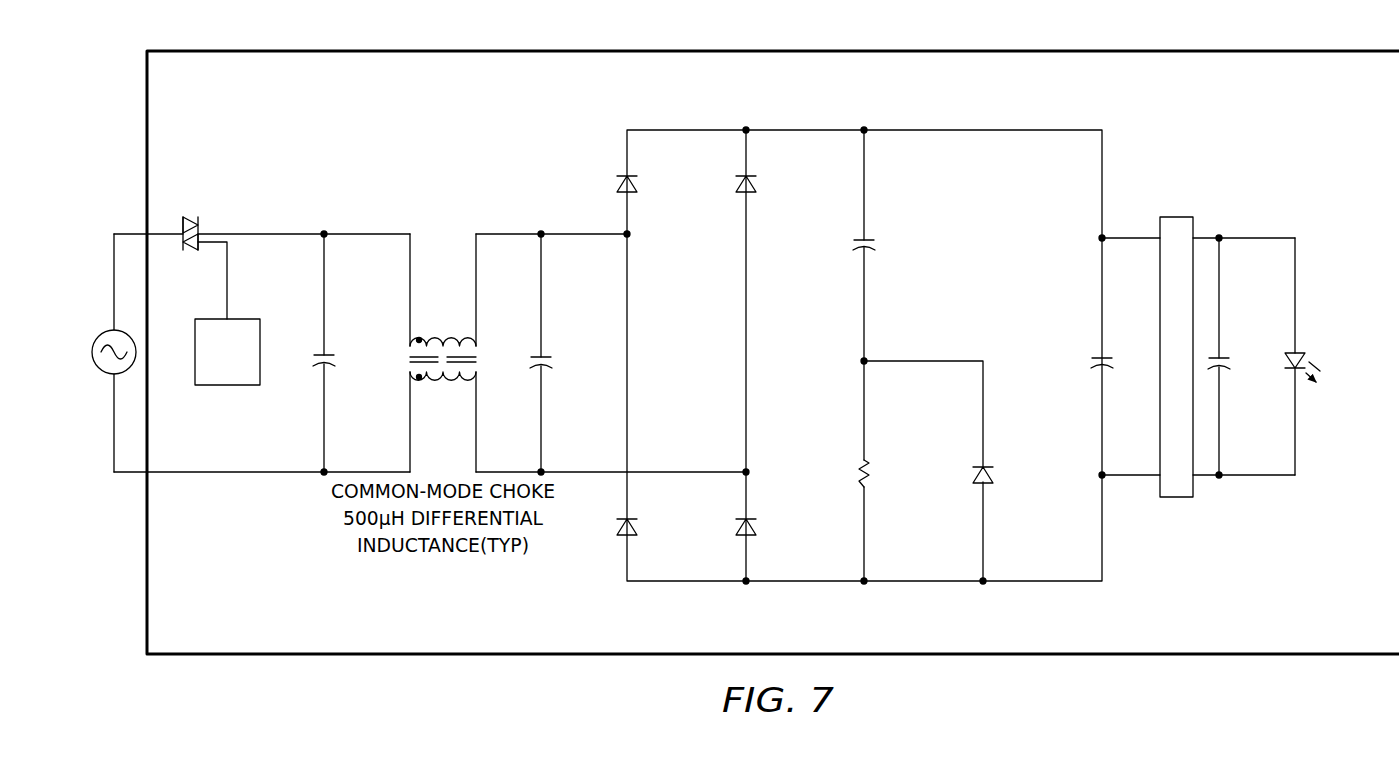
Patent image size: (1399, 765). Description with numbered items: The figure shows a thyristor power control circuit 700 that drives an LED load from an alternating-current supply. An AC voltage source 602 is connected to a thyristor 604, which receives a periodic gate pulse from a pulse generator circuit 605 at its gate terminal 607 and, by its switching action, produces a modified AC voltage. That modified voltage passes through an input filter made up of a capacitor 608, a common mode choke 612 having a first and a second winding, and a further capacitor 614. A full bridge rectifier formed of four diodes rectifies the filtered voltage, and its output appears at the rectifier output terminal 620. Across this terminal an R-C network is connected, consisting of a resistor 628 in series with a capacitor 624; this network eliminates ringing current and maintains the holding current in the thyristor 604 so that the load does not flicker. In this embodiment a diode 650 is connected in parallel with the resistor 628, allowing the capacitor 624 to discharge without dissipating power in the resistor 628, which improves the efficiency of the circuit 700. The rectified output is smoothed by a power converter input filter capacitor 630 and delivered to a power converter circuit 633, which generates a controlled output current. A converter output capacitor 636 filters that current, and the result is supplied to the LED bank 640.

The AC voltage source 602 is at (104, 333).
The thyristor 604 is at (192, 216).
The pulse generator circuit 605 is at (246, 365).
The gate terminal 607 is at (226, 290).
The capacitor 608 is at (321, 353).
The common mode choke 612 is at (415, 334).
The capacitor 614 is at (538, 354).
The rectifier output terminal 620 is at (810, 129).
The capacitor 624 is at (868, 237).
The resistor 628 is at (860, 468).
The power converter input filter capacitor 630 is at (1098, 356).
The power converter circuit 633 is at (1175, 216).
The converter output capacitor 636 is at (1222, 356).
The LED bank 640 is at (1302, 351).
The diode 650 is at (980, 483).
The thyristor power control circuit 700 is at (537, 158).